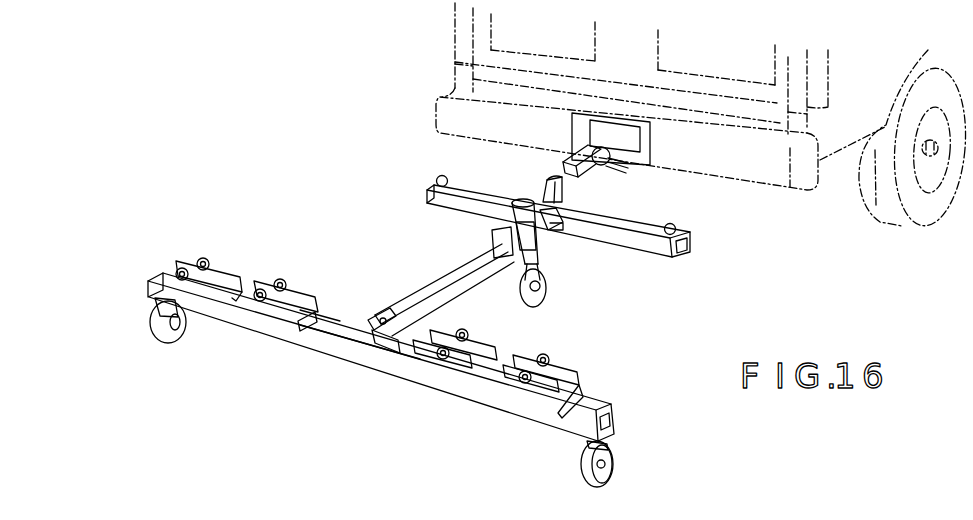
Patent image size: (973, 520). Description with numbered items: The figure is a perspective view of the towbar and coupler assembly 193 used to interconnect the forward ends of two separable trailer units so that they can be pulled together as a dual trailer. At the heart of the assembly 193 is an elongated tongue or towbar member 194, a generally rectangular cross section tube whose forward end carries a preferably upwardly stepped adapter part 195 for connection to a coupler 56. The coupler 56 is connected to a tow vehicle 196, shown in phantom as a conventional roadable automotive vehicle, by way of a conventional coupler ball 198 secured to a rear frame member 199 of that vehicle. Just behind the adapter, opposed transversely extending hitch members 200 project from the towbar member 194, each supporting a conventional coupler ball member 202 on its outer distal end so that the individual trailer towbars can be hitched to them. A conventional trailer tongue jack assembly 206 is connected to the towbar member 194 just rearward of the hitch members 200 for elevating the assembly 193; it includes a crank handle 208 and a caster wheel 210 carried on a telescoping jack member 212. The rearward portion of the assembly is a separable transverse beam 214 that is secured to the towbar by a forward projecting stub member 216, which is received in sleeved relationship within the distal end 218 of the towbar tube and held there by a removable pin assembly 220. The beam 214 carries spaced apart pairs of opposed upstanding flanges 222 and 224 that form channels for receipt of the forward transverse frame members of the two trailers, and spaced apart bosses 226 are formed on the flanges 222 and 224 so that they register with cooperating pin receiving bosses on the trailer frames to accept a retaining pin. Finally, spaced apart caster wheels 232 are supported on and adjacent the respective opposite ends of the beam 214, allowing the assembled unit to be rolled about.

The towbar and coupler assembly 193 is at (343, 186).
The towbar member 194 is at (452, 266).
The adapter part 195 is at (565, 199).
The tow vehicle 196 is at (873, 214).
The coupler ball 198 is at (614, 166).
The rear frame member 199 is at (643, 158).
The hitch members 200 is at (472, 209).
The coupler ball member 202 is at (437, 181).
The tongue jack assembly 206 is at (547, 240).
The crank handle 208 is at (545, 200).
The caster wheel 210 is at (536, 302).
The telescoping jack member 212 is at (514, 272).
The transverse beam 214 is at (350, 357).
The stub member 216 is at (326, 328).
The distal end 218 is at (410, 364).
The removable pin assembly 220 is at (408, 312).
The upstanding flanges 222 is at (173, 289).
The upstanding flanges 224 is at (215, 268).
The bosses 226 is at (290, 280).
The caster wheels 232 is at (173, 337).
The coupler 56 is at (584, 150).